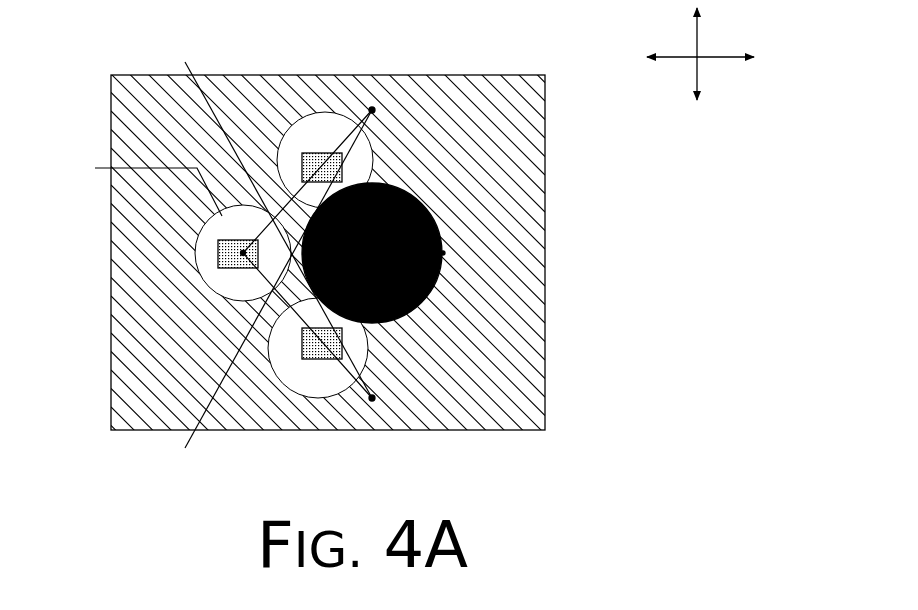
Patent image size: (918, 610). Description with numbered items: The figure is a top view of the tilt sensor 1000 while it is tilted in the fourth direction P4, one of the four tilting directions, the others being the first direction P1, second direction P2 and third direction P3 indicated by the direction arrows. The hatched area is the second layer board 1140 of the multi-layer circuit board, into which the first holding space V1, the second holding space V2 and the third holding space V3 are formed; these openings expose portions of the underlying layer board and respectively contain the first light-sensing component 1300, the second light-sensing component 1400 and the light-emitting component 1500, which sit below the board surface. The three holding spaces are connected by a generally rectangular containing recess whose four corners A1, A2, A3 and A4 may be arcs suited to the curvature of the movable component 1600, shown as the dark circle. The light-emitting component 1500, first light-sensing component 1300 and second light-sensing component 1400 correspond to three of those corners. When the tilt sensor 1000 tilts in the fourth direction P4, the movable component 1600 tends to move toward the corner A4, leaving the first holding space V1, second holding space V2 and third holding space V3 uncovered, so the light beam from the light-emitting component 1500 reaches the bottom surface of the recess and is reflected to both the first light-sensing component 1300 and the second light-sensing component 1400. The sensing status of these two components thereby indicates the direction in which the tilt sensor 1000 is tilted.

The tilt sensor 1000 is at (634, 418).
The second layer board 1140 is at (546, 358).
The first light-sensing component 1300 is at (302, 166).
The second light-sensing component 1400 is at (302, 344).
The light-emitting component 1500 is at (218, 268).
The movable component 1600 is at (395, 186).
The corner A1 is at (320, 130).
The corner A2 is at (320, 378).
The corner A3 is at (205, 239).
The corner A4 is at (445, 254).
The first holding space V1 is at (272, 214).
The second holding space V2 is at (272, 295).
The third holding space V3 is at (143, 185).
The first direction P1 is at (711, 28).
The second direction P2 is at (713, 80).
The third direction P3 is at (672, 41).
The fourth direction P4 is at (732, 43).